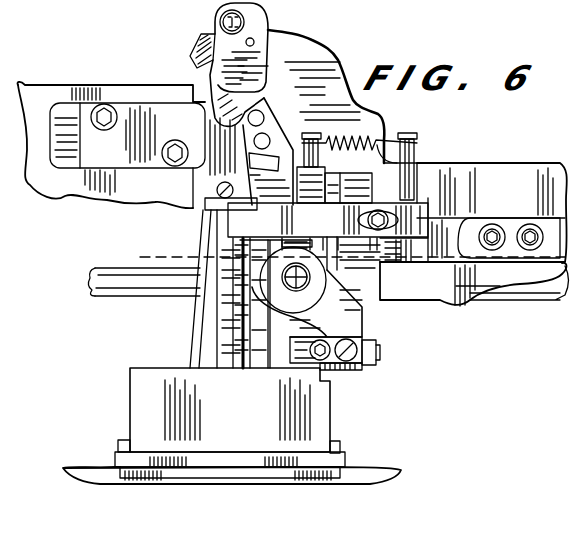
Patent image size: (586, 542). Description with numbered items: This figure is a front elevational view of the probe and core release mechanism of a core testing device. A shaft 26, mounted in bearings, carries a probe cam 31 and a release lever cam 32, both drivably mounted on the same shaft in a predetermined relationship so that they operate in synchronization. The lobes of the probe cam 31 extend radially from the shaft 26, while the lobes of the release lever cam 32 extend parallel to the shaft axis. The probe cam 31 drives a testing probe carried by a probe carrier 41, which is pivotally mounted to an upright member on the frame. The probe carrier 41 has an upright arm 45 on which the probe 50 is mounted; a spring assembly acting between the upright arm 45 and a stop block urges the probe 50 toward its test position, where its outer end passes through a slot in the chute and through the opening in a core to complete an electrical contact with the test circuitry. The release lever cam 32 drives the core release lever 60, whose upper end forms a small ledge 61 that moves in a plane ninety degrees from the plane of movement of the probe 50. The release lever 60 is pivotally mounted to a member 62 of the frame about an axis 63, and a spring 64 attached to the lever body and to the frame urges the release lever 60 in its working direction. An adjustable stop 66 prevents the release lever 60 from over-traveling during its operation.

The shaft 26 is at (170, 284).
The probe cam 31 is at (337, 258).
The release lever cam 32 is at (373, 331).
The probe carrier 41 is at (227, 351).
The upright arm 45 is at (252, 32).
The probe 50 is at (221, 23).
The core release lever 60 is at (208, 82).
The ledge 61 is at (203, 35).
The member of the frame 62 is at (353, 321).
The axis 63 is at (292, 295).
The spring 64 is at (372, 140).
The adjustable stop 66 is at (242, 222).